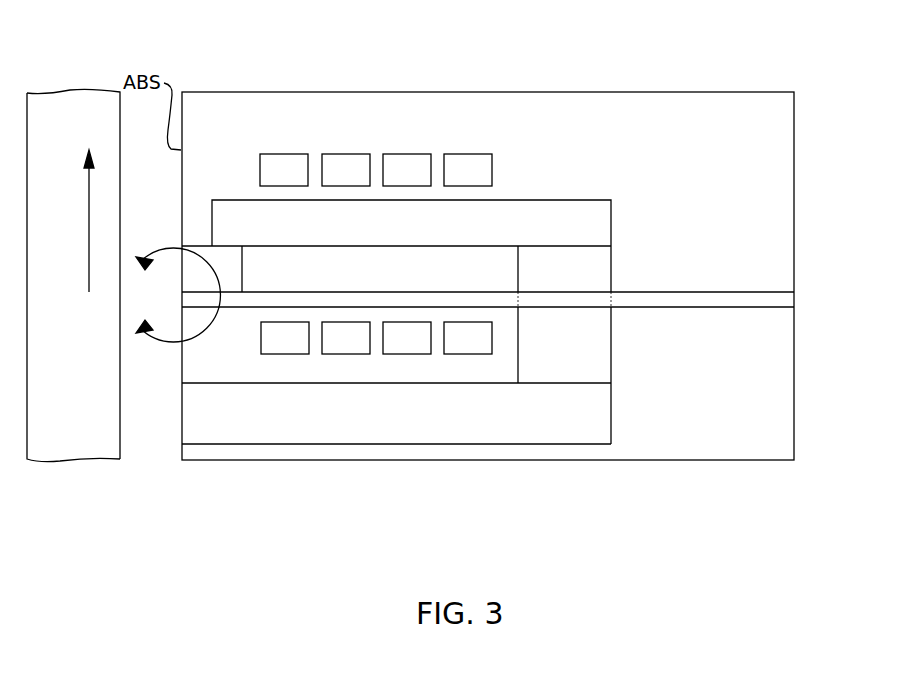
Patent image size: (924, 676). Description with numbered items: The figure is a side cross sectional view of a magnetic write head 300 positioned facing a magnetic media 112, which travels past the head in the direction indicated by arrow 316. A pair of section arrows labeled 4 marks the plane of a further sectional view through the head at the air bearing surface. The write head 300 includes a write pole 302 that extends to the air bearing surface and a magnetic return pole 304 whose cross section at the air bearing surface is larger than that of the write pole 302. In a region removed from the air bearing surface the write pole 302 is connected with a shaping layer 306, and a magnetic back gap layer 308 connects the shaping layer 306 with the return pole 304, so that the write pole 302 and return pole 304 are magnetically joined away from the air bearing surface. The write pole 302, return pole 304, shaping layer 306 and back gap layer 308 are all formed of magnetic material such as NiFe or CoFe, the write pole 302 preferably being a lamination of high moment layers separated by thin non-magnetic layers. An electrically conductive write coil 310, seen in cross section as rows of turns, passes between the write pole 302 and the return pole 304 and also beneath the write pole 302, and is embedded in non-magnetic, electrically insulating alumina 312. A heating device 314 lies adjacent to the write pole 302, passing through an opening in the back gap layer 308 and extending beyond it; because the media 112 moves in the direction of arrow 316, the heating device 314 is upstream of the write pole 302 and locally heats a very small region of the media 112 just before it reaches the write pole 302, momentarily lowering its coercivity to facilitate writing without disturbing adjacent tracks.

The magnetic media 112 is at (62, 100).
The arrow 316 is at (89, 232).
The section line of FIG. 4 is at (176, 296).
The write head 300 is at (447, 92).
The write pole 302 is at (220, 266).
The magnetic return pole 304 is at (442, 412).
The shaping layer 306 is at (394, 222).
The magnetic back gap layer 308 is at (590, 267).
The write coil 310 is at (376, 254).
The alumina 312 is at (702, 150).
The heating device 314 is at (778, 299).